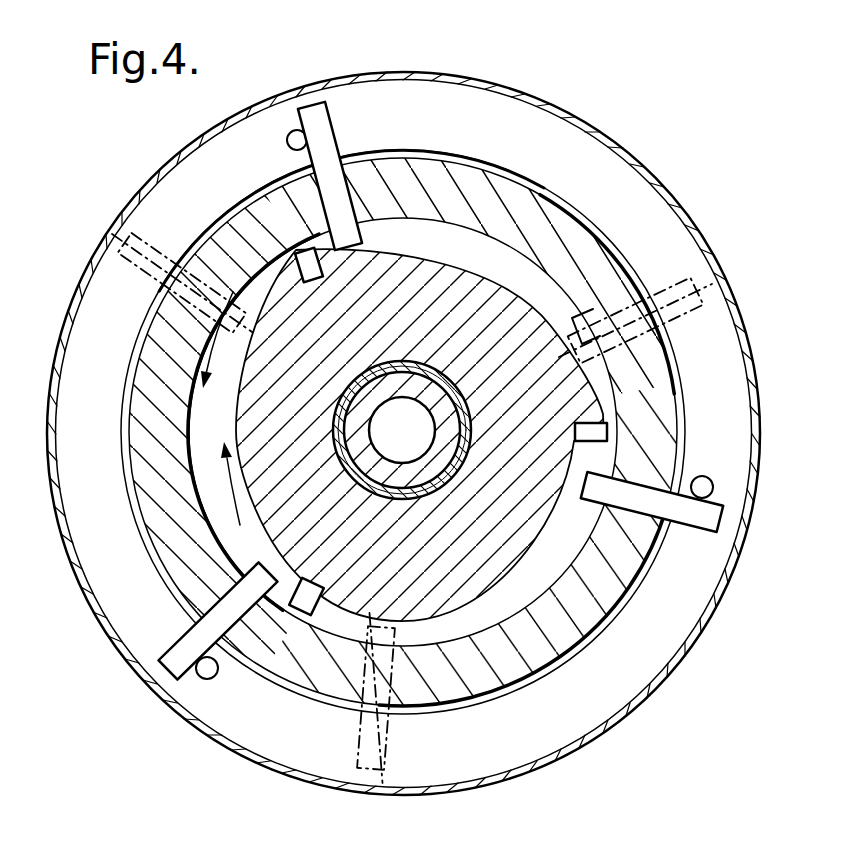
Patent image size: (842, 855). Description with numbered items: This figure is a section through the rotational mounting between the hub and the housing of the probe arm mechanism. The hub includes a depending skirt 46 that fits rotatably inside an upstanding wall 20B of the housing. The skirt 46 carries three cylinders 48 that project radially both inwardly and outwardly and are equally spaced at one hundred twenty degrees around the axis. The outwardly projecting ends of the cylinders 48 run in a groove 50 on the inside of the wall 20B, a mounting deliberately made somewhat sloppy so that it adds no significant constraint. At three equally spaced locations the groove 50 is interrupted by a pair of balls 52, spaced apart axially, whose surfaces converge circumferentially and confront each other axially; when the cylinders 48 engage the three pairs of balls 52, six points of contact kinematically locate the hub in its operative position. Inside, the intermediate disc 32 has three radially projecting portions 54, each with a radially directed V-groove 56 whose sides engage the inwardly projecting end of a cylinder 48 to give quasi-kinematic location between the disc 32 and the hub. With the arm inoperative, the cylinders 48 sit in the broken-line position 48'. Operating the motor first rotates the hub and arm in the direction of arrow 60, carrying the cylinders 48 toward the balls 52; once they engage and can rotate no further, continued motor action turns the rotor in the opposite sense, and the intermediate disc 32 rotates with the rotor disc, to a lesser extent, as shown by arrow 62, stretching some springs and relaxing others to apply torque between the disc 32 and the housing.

The upstanding wall 20B is at (637, 160).
The groove 50 is at (670, 233).
The depending skirt 46 is at (633, 553).
The radially projecting portions 54 is at (256, 210).
The V-groove 56 is at (302, 247).
The cylinders 48 is at (452, 378).
The cylinders in inoperative position 48' is at (441, 508).
The balls 52 is at (297, 129).
The intermediate disc 32 is at (460, 537).
The arrow 60 is at (222, 347).
The arrow 62 is at (235, 503).